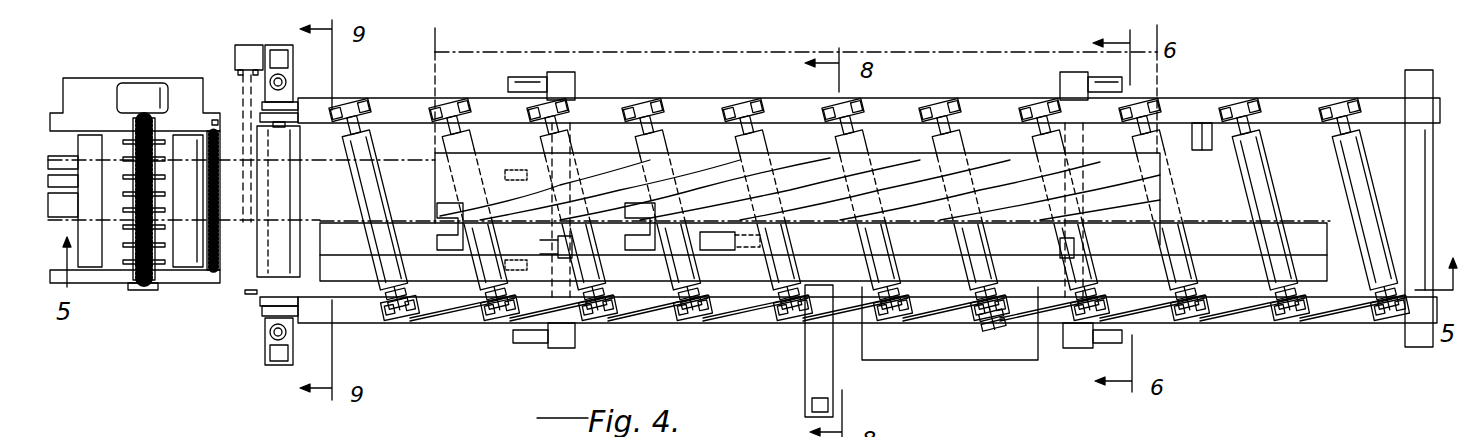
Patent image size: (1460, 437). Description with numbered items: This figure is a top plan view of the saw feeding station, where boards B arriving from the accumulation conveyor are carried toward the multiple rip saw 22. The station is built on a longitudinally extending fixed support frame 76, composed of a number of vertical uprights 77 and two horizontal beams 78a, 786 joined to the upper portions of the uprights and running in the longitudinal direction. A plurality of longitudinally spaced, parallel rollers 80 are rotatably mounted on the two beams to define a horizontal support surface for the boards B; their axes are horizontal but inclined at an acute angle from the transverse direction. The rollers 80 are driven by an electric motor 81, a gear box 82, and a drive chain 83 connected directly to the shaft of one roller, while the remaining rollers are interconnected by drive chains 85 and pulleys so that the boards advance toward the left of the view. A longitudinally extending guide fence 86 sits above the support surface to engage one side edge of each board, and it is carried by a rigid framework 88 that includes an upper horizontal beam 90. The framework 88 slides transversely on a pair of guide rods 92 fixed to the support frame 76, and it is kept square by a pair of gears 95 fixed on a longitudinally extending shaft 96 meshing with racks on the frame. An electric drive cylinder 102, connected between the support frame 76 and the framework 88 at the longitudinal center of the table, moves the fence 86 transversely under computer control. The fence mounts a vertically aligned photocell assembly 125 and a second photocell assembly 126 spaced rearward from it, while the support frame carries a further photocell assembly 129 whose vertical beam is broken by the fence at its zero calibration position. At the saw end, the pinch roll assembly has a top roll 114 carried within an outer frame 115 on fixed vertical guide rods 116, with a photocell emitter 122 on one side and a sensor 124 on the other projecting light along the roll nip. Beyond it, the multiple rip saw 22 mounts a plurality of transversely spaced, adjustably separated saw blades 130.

The multiple rip saw 22 is at (116, 285).
The saw blades 130 is at (122, 173).
The top roll 114 is at (272, 262).
The photocell emitter 122 is at (245, 47).
The vertical guide rods 116 is at (295, 80).
The sensor 124 is at (250, 293).
The outer frame 115 is at (265, 368).
The boards B is at (683, 150).
The rigid framework 88 is at (1235, 262).
The upper horizontal beam 90 is at (1227, 240).
The photocell assembly 125 is at (455, 203).
The second photocell assembly 126 is at (640, 203).
The gears 95 is at (575, 250).
The shaft 96 is at (762, 262).
The photocell assembly 129 is at (1200, 137).
The vertical uprights 77 is at (565, 72).
The horizontal beam 786 is at (1300, 100).
The horizontal beam 78a is at (1345, 325).
The fixed support frame 76 is at (1378, 96).
The electric drive cylinder 102 is at (797, 360).
The rollers 80 is at (372, 174).
The guide fence 86 is at (1272, 232).
The electric motor 81 is at (918, 328).
The gear box 82 is at (950, 328).
The drive chain 83 is at (978, 332).
The guide rods 92 is at (518, 320).
The drive chains 85 is at (640, 316).